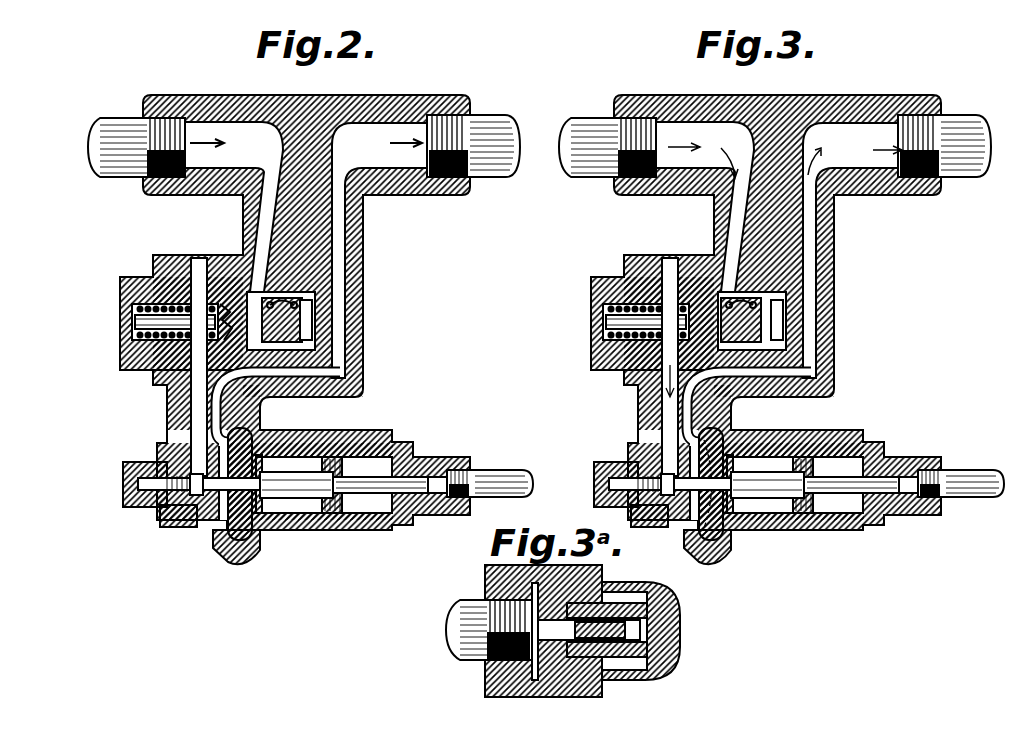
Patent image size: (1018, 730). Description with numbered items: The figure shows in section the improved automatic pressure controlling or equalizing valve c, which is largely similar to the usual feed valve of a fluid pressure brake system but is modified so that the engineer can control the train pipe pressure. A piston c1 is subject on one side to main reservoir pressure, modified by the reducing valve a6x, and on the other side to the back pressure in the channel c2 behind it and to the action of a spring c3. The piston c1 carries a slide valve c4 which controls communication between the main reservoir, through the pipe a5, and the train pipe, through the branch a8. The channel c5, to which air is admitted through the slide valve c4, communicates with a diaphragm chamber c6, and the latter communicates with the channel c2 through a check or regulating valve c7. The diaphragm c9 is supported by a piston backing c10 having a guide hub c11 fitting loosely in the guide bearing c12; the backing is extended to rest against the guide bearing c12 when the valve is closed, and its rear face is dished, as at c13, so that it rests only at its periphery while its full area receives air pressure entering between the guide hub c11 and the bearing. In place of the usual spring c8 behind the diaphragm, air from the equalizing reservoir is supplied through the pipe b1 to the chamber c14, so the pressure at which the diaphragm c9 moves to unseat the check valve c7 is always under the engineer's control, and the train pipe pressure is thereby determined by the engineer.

In FIG. 2, the pipe a5 is at (92, 137).
In FIG. 3, the pipe a5 is at (607, 127).
In FIG. 3A, the pipe a5 is at (452, 608).
In FIG. 2, the branch a8 is at (495, 124).
In FIG. 3, the branch a8 is at (944, 129).
In FIG. 3A, the reducing valve a6x is at (657, 682).
In FIG. 2, the pipe b1 is at (488, 478).
In FIG. 3, the pipe b1 is at (961, 466).
In FIG. 2, the automatic pressure controlling or equalizing valve c is at (295, 312).
In FIG. 3, the automatic pressure controlling or equalizing valve c is at (766, 312).
In FIG. 2, the piston c1 is at (245, 288).
In FIG. 3, the piston c1 is at (684, 207).
In FIG. 2, the channel c2 is at (172, 388).
In FIG. 3, the channel c2 is at (642, 331).
In FIG. 2, the spring c3 is at (140, 303).
In FIG. 3, the spring c3 is at (624, 293).
In FIG. 2, the slide valve c4 is at (315, 318).
In FIG. 3, the slide valve c4 is at (807, 321).
In FIG. 2, the channel c5 is at (342, 357).
In FIG. 3, the channel c5 is at (814, 282).
In FIG. 2, the diaphragm chamber c6 is at (200, 443).
In FIG. 3, the diaphragm chamber c6 is at (629, 367).
In FIG. 2, the check or regulating valve c7 is at (162, 508).
In FIG. 3, the check or regulating valve c7 is at (649, 529).
In FIG. 2, the spring c8 is at (140, 462).
In FIG. 3, the spring c8 is at (591, 472).
In FIG. 2, the diaphragm c9 is at (235, 512).
In FIG. 3, the diaphragm c9 is at (708, 510).
In FIG. 2, the piston backing c10 is at (250, 450).
In FIG. 3, the piston backing c10 is at (740, 460).
In FIG. 2, the guide hub c11 is at (272, 522).
In FIG. 3, the guide hub c11 is at (793, 462).
In FIG. 2, the guide bearing c12 is at (248, 556).
In FIG. 3, the guide bearing c12 is at (734, 556).
In FIG. 2, the dished face c13 is at (238, 522).
In FIG. 2, the chamber c14 is at (305, 507).
In FIG. 3, the chamber c14 is at (763, 525).